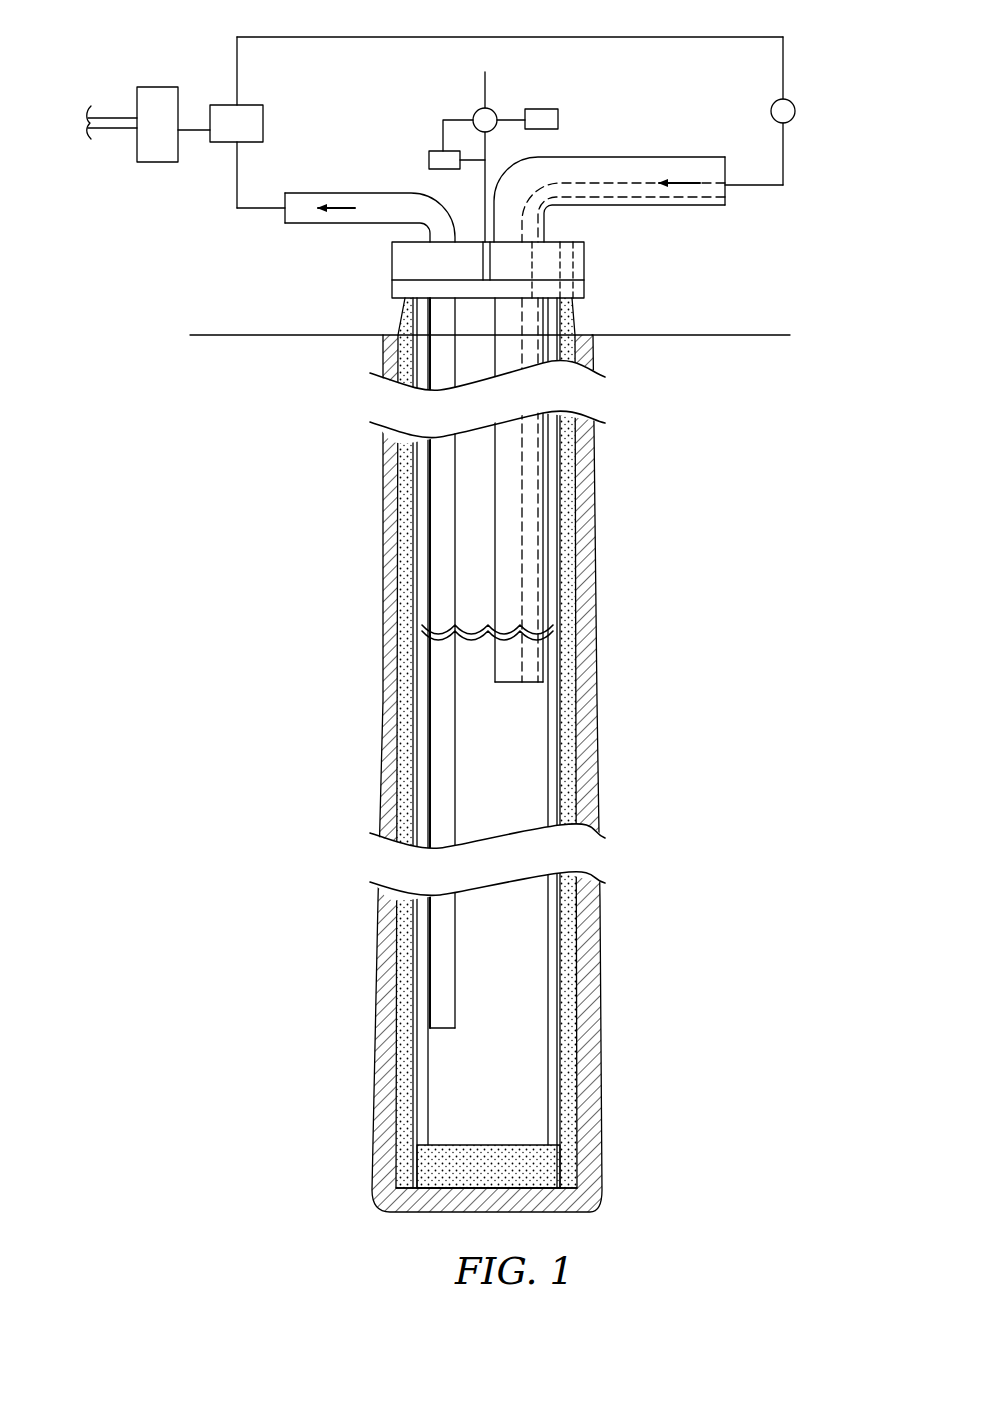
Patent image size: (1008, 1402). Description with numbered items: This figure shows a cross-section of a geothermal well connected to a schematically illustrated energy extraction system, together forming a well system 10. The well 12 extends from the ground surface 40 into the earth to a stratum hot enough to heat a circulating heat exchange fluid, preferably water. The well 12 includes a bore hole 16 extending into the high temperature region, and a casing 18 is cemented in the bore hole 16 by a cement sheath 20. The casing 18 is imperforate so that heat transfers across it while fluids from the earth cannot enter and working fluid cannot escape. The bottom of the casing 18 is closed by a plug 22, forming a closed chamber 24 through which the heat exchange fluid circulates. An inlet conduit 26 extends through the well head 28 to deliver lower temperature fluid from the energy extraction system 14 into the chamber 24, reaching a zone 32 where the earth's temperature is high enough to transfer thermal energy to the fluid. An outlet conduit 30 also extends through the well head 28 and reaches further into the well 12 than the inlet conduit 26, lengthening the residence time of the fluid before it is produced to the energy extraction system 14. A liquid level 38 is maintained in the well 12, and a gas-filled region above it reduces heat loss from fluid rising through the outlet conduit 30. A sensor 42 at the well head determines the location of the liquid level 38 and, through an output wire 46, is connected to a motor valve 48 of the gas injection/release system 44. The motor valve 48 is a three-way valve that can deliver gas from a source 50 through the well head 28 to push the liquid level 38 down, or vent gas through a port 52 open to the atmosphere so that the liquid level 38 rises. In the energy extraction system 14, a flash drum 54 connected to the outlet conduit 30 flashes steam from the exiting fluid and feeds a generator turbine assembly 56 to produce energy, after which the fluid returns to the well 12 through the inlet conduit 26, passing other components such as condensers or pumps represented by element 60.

The well system 10 is at (810, 45).
The well 12 is at (350, 293).
The energy extraction system 14 is at (185, 58).
The bore hole 16 is at (590, 495).
The casing 18 is at (553, 537).
The cement sheath 20 is at (388, 603).
The plug 22 is at (527, 1190).
The closed chamber 24 is at (512, 1058).
The inlet conduit 26 is at (627, 200).
The well head 28 is at (586, 272).
The outlet conduit 30 is at (337, 217).
The zone 32 is at (598, 582).
The liquid level 38 is at (430, 642).
The ground surface 40 is at (643, 335).
The sensor 42 is at (429, 156).
The gas injection/release system 44 is at (565, 88).
The output wire 46 is at (441, 120).
The motor valve 48 is at (474, 114).
The source 50 is at (560, 119).
The port 52 is at (489, 87).
The flash drum 54 is at (220, 123).
The generator turbine assembly 56 is at (132, 124).
The element 60 is at (771, 112).